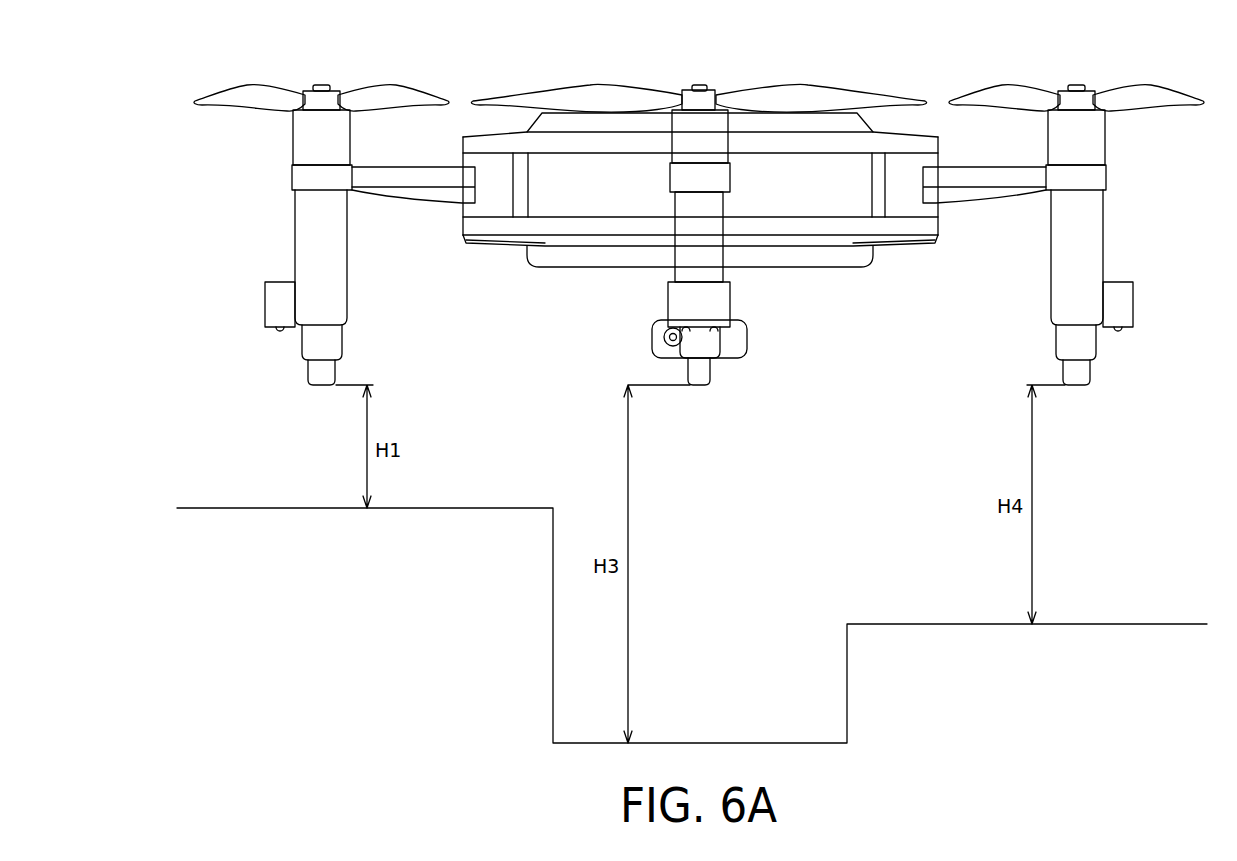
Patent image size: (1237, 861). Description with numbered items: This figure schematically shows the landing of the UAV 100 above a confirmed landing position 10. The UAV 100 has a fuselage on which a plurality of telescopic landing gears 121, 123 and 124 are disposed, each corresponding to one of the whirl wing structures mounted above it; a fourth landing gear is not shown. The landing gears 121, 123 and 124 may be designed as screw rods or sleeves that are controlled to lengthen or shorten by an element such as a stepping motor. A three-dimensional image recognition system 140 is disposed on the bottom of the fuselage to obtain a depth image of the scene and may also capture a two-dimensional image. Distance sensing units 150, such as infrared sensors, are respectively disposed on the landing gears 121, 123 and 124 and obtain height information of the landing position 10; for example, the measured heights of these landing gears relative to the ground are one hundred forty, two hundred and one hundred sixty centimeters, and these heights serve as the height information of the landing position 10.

The UAV 100 is at (112, 47).
The landing gear 121 is at (308, 242).
The landing gear 123 is at (683, 255).
The landing gear 124 is at (1080, 242).
The distance sensing unit 150 is at (278, 306).
The 3D image recognition system 140 is at (735, 338).
The landing position 10 is at (1179, 612).